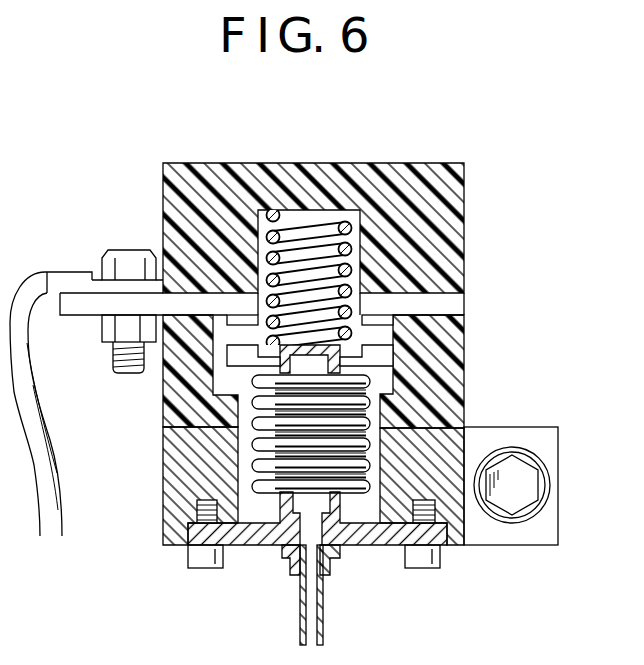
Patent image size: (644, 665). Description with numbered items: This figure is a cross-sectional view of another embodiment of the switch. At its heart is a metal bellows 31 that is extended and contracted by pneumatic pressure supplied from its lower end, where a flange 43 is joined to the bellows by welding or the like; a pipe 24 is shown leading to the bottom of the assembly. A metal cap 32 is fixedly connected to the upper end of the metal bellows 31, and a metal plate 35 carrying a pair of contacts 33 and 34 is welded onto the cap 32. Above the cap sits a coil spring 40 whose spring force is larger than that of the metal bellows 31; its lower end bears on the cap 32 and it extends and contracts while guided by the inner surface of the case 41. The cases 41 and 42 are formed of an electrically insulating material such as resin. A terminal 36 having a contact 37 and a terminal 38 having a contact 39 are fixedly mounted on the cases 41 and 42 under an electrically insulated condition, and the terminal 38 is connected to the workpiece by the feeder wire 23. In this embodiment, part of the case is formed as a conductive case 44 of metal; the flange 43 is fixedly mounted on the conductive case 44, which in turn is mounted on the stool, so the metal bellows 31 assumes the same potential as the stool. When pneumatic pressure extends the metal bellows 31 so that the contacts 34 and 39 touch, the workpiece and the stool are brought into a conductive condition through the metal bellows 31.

The feeder wire 23 is at (60, 495).
The tube 24 is at (300, 599).
The metal bellows 31 is at (370, 422).
The metal cap 32 is at (368, 346).
The contact 33 is at (373, 357).
The contact 34 is at (228, 349).
The metal plate 35 is at (240, 364).
The terminal 36 is at (538, 530).
The contact 37 is at (390, 295).
The terminal 38 is at (183, 302).
The contact 39 is at (242, 305).
The coil spring 40 is at (310, 220).
The case 41 is at (452, 232).
The case 42 is at (445, 323).
The flange 43 is at (377, 546).
The conductive case 44 is at (540, 443).